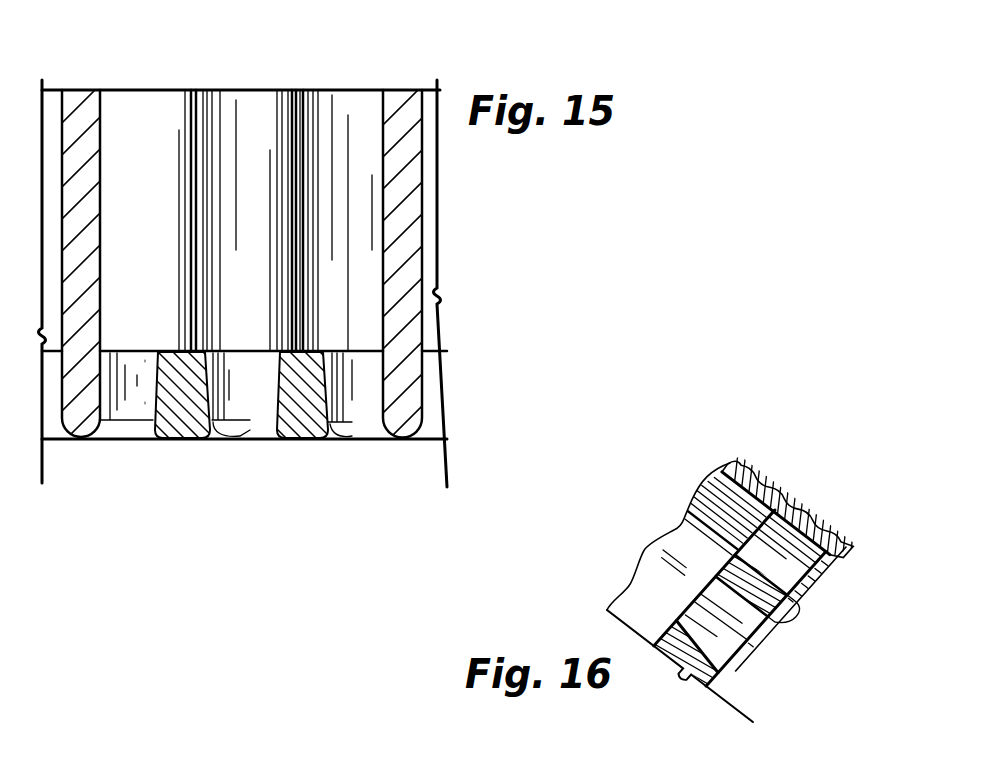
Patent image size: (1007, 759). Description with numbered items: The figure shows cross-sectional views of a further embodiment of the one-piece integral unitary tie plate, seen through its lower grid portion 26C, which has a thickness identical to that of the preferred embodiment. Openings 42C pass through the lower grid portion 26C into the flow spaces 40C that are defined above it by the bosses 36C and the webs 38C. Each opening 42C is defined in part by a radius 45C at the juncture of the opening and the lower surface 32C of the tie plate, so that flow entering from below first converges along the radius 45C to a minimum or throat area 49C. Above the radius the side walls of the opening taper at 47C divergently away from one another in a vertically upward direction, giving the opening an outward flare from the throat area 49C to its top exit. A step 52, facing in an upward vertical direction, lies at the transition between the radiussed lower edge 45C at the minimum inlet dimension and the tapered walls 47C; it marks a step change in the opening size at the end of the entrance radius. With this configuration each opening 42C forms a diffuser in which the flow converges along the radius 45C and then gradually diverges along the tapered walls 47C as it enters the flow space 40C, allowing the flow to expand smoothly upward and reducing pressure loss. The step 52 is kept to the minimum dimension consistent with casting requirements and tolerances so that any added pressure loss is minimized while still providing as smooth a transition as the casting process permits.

In FIG. 15, the lower grid portion 26C is at (84, 424).
In FIG. 15, the lower surface 32C is at (353, 444).
In FIG. 15, the bosses 36C is at (128, 95).
In FIG. 16, the bosses 36C is at (762, 484).
In FIG. 15, the webs 38C is at (82, 98).
In FIG. 15, the flow spaces 40C is at (248, 100).
In FIG. 15, the openings 42C is at (137, 352).
In FIG. 16, the openings 42C is at (707, 577).
In FIG. 15, the radius 45C is at (226, 452).
In FIG. 16, the radius 45C is at (755, 650).
In FIG. 15, the tapered walls 47C is at (153, 395).
In FIG. 16, the tapered walls 47C is at (812, 585).
In FIG. 15, the throat area 49C is at (262, 425).
In FIG. 15, the step 52 is at (295, 440).
In FIG. 16, the step 52 is at (670, 573).